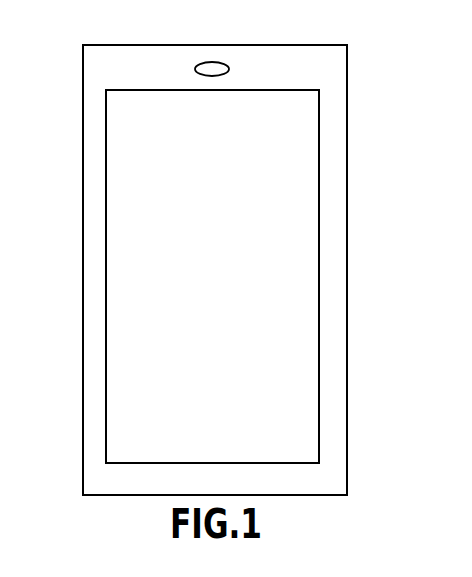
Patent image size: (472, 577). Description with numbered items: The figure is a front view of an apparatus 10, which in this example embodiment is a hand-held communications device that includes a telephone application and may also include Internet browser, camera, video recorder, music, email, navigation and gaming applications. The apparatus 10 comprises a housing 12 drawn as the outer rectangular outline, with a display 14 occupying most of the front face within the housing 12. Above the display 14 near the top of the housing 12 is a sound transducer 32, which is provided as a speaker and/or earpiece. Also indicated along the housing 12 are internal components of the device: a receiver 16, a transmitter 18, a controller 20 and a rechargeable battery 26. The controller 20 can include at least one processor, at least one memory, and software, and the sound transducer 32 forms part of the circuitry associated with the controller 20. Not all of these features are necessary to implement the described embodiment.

The apparatus 10 is at (366, 37).
The housing 12 is at (82, 113).
The display 14 is at (307, 231).
The receiver 16 is at (82, 167).
The transmitter 18 is at (82, 215).
The controller 20 is at (82, 275).
The rechargeable battery 26 is at (82, 333).
The sound transducer 32 is at (213, 67).